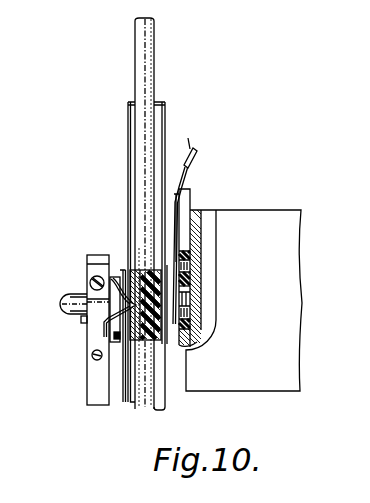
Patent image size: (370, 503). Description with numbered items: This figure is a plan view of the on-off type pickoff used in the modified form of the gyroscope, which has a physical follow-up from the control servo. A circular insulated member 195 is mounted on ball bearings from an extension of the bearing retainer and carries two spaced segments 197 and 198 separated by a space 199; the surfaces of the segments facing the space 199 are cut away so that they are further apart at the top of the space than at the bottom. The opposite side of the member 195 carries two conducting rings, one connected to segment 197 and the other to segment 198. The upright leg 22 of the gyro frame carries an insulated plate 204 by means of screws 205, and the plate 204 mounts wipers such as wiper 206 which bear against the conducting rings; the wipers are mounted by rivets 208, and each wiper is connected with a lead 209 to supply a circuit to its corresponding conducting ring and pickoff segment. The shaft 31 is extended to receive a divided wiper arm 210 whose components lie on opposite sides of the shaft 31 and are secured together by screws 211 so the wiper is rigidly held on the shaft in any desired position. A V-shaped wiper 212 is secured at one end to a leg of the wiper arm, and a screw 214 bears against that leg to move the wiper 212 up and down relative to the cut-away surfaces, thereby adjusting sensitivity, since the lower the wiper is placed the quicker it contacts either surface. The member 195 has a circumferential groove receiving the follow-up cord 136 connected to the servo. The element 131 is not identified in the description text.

The follow-up cord 136 is at (137, 70).
The insulated member 195 is at (120, 131).
The lead 209 is at (197, 145).
The rivet 208 is at (167, 191).
The insulated plate 204 is at (176, 189).
The upright leg 22 is at (194, 202).
The segment 197 is at (121, 264).
The screw 211 is at (82, 271).
The cable 131 is at (56, 305).
The shaft 31 is at (74, 314).
The wiper 212 is at (94, 322).
The screw 214 is at (84, 347).
The wiper arm 210 is at (80, 382).
The screw 205 is at (192, 256).
The wiper 206 is at (190, 274).
The space 199 is at (190, 290).
The segment 198 is at (192, 331).